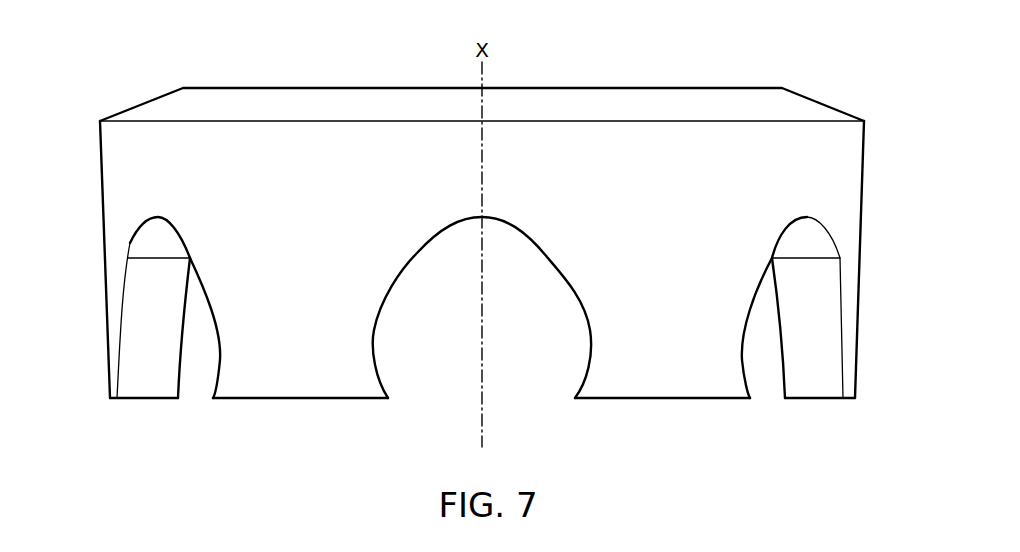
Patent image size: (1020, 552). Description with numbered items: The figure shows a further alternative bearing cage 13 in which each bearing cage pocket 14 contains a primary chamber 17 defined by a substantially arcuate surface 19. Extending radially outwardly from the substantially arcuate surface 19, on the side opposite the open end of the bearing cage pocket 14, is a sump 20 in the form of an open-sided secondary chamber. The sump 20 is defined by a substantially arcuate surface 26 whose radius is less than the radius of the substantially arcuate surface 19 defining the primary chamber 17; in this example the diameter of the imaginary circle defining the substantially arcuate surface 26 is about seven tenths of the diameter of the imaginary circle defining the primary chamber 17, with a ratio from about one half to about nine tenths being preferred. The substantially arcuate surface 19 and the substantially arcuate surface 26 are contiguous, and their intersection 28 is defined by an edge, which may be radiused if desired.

The bearing cage 13 is at (885, 111).
The bearing cage pocket 14 is at (392, 365).
The primary chamber 17 is at (195, 377).
The substantially arcuate surface 19 is at (137, 372).
The sump 20 is at (508, 243).
The substantially arcuate surface 26 is at (165, 239).
The intersection 28 is at (143, 258).